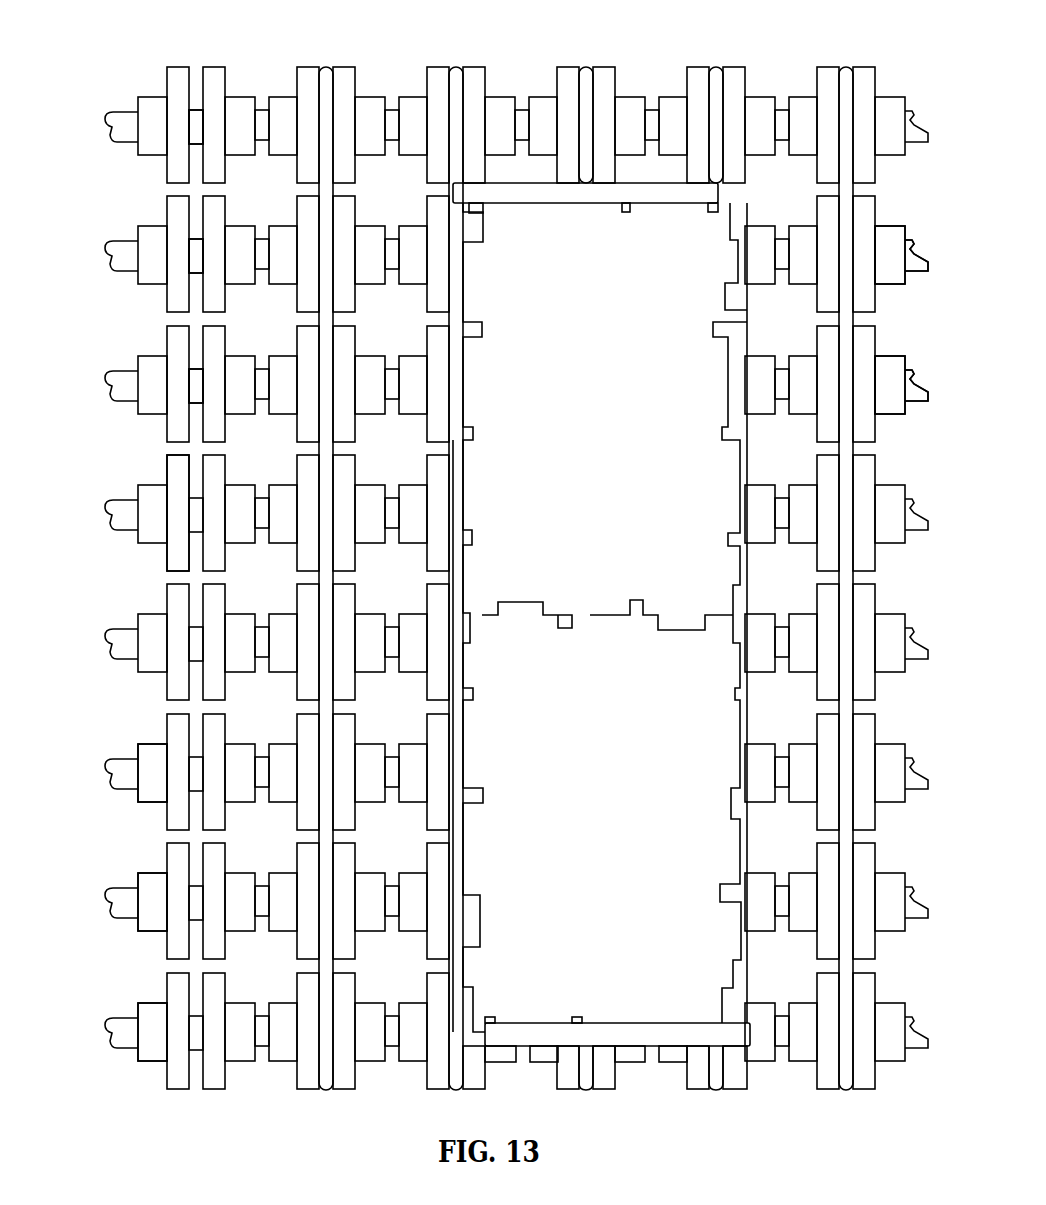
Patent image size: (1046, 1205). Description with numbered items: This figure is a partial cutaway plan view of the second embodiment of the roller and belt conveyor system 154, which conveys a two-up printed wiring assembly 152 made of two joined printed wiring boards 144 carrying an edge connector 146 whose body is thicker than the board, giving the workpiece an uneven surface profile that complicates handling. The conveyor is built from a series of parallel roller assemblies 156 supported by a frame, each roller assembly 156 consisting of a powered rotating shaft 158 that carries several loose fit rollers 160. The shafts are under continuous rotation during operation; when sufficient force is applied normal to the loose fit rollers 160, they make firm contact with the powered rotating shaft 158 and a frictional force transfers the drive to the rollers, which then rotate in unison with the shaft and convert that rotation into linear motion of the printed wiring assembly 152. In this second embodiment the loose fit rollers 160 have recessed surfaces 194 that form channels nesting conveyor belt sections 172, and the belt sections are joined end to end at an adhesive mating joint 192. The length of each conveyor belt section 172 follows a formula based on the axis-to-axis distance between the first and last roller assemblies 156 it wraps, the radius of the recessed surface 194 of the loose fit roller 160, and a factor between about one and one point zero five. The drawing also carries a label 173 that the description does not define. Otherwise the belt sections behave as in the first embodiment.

The roller and belt conveyor system 154 is at (625, 50).
The roller assembly 156 is at (124, 95).
The conveyor belt section 172 is at (455, 212).
The adhesive mating joint 192 is at (836, 455).
The edge connector 146 is at (690, 196).
The printed wiring assembly 152 is at (649, 1065).
The printed wiring board 144 is at (548, 410).
The powered rotating shaft 158 is at (913, 372).
The recessed surface 194 is at (198, 405).
The plate 173 is at (195, 579).
The loose fit roller 160 is at (150, 1018).